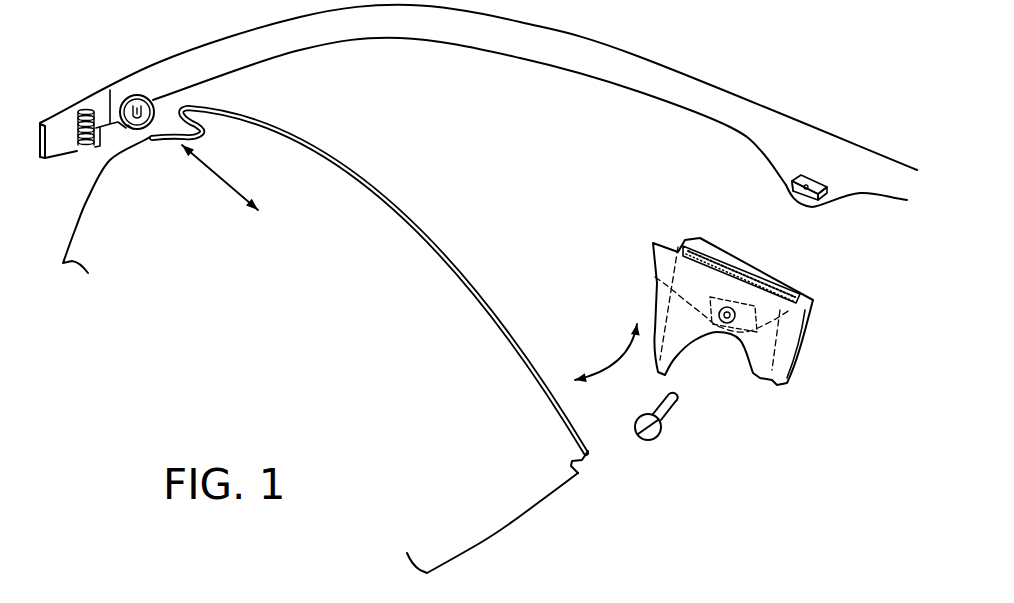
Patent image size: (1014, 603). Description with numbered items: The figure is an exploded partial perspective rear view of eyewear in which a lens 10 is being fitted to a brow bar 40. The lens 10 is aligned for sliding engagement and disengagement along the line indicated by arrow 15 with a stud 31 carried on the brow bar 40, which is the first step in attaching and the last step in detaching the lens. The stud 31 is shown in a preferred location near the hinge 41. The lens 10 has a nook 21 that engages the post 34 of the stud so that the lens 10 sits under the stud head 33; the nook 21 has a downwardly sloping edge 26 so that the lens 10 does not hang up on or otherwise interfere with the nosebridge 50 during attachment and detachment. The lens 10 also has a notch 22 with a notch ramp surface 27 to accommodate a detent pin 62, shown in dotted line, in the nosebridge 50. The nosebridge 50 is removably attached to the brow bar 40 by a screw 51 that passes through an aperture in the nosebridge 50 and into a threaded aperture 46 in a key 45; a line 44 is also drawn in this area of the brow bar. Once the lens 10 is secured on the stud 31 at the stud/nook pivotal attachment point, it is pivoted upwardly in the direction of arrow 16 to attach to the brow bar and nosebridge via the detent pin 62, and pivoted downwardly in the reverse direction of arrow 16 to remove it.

The lens 10 is at (424, 234).
The arrow 15 is at (207, 172).
The arrow 16 is at (618, 353).
The nook 21 is at (209, 138).
The notch 22 is at (584, 473).
The downwardly sloping edge 26 is at (157, 141).
The notch ramp surface 27 is at (577, 456).
The stud 31 is at (128, 125).
The stud head 33 is at (125, 92).
The post 34 is at (147, 96).
The brow bar 40 is at (661, 63).
The hinge 41 is at (60, 123).
The frame line 44 is at (813, 208).
The key 45 is at (829, 181).
The threaded aperture 46 is at (790, 193).
The nosebridge 50 is at (797, 338).
The screw 51 is at (660, 433).
The detent pin 62 is at (702, 240).